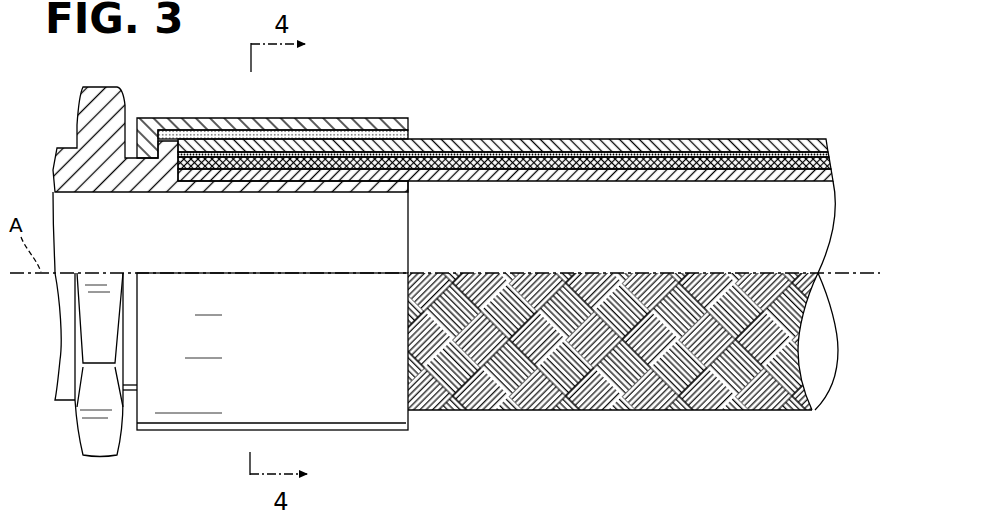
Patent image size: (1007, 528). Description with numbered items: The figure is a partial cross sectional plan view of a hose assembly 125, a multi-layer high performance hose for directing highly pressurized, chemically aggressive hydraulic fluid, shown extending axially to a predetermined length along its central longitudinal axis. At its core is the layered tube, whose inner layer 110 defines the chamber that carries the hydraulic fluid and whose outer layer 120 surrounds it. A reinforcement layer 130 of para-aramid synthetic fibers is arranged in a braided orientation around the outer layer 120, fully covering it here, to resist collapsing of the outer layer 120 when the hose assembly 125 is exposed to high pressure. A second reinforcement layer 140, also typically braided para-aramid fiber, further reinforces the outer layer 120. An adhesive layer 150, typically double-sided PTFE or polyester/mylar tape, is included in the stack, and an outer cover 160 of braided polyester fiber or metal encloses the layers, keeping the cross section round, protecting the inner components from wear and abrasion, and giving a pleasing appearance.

The inner layer 110 is at (834, 181).
The outer layer 120 is at (833, 163).
The hose assembly 125 is at (676, 31).
The reinforcement layer 130 is at (830, 156).
The second reinforcement layer 140 is at (725, 138).
The adhesive layer 150 is at (408, 136).
The outer cover 160 is at (283, 118).